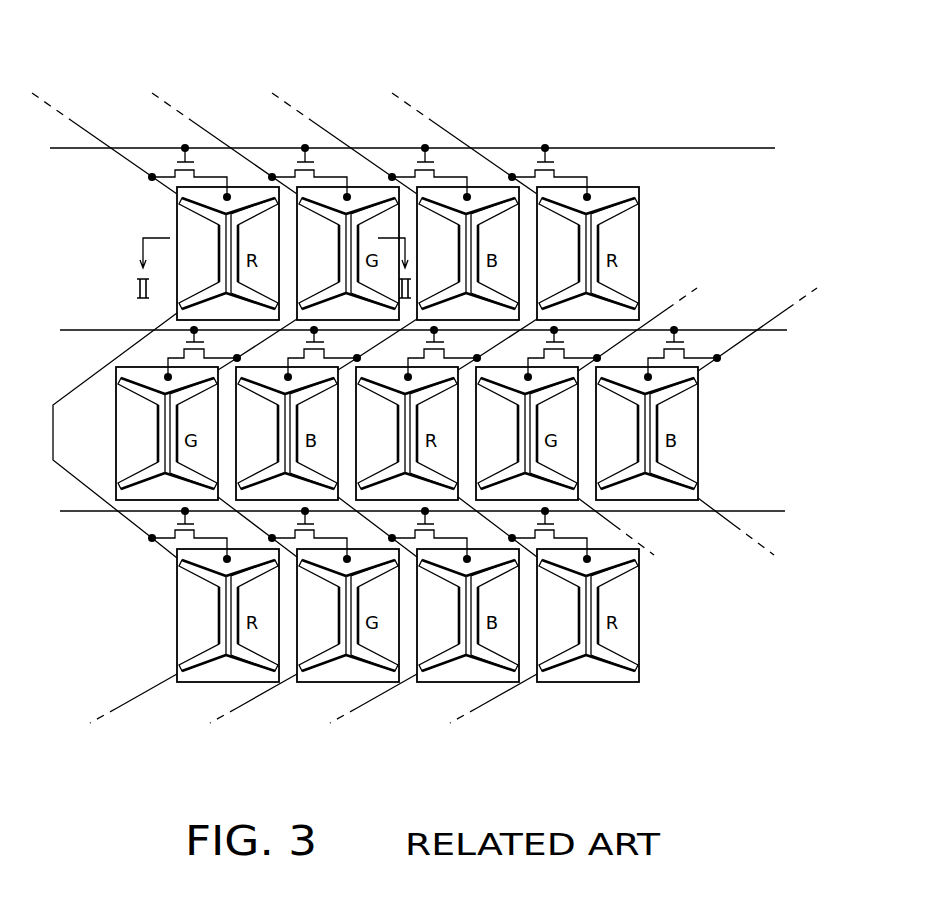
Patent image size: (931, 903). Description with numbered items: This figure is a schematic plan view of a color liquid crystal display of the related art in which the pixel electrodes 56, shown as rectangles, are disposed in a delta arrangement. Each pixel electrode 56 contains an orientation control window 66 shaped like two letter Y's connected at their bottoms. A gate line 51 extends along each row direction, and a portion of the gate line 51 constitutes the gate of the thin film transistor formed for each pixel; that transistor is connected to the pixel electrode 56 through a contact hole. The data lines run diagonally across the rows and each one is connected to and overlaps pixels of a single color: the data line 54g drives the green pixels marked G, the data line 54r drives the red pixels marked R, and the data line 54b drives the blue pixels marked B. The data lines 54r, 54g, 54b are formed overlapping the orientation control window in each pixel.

The gate line 51 is at (434, 332).
The data line driving red pixels 54r is at (52, 107).
The data line driving green pixels 54g is at (172, 107).
The data line driving blue pixels 54b is at (292, 107).
The pixel electrode 56 is at (638, 282).
The orientation control window 66 is at (608, 223).